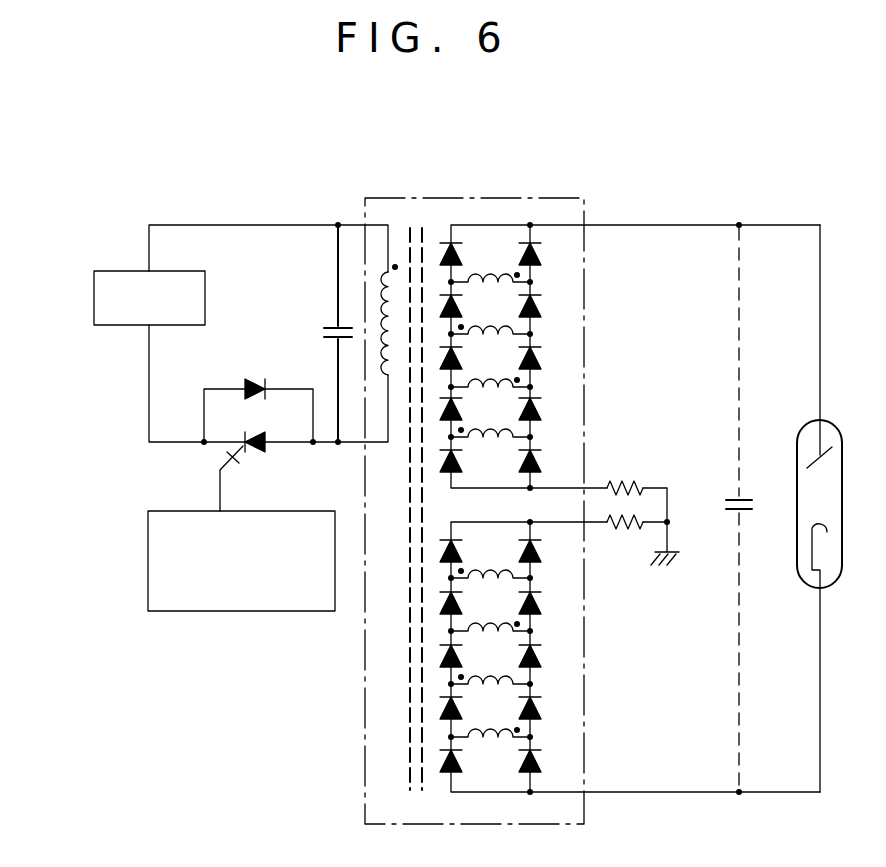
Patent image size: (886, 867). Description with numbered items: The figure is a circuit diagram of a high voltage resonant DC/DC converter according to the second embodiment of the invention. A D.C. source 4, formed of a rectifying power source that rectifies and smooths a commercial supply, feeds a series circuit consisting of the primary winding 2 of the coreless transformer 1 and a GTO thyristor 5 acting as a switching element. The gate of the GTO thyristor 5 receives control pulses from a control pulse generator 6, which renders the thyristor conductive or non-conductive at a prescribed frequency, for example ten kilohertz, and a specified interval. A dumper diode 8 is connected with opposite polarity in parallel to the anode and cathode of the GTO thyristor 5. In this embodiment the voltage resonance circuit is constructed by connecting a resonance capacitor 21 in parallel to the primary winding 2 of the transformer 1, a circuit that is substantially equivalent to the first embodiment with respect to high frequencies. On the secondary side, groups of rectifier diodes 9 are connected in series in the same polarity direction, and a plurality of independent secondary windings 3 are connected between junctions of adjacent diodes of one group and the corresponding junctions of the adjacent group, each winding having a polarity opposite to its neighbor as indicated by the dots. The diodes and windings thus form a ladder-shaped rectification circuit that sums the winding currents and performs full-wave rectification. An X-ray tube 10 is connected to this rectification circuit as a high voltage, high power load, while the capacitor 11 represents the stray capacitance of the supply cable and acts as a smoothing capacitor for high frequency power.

The transformer 1 is at (527, 198).
The primary winding 2 is at (387, 374).
The secondary windings 3 is at (487, 275).
The D.C. source 4 is at (196, 314).
The GTO thyristor 5 is at (263, 454).
The control pulse generator 6 is at (270, 612).
The dumper diode 8 is at (254, 378).
The rectifier diodes 9 is at (542, 312).
The X-ray tube 10 is at (797, 552).
The capacitor 11 is at (724, 506).
The resonance capacitor 21 is at (326, 328).